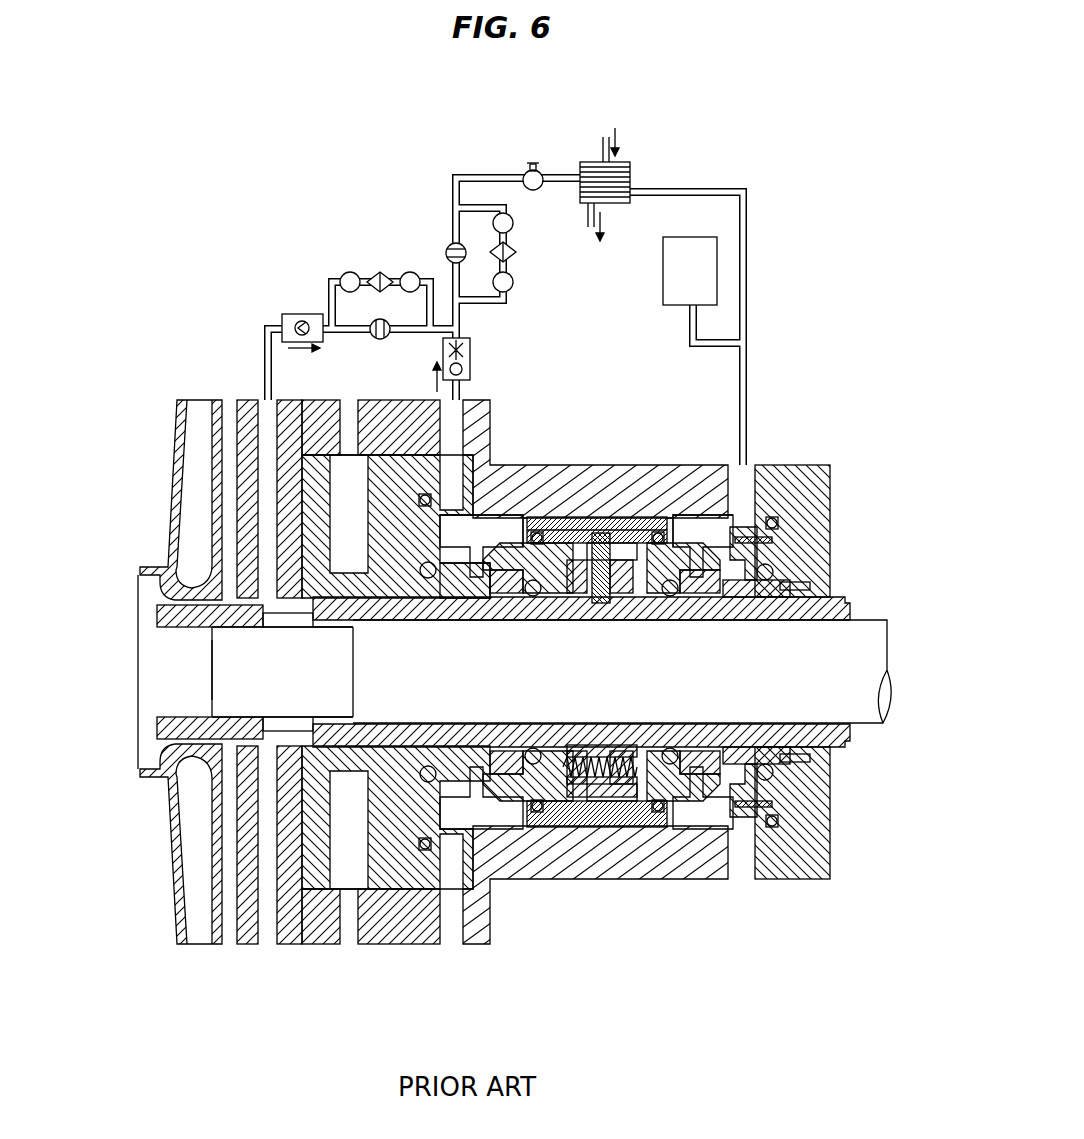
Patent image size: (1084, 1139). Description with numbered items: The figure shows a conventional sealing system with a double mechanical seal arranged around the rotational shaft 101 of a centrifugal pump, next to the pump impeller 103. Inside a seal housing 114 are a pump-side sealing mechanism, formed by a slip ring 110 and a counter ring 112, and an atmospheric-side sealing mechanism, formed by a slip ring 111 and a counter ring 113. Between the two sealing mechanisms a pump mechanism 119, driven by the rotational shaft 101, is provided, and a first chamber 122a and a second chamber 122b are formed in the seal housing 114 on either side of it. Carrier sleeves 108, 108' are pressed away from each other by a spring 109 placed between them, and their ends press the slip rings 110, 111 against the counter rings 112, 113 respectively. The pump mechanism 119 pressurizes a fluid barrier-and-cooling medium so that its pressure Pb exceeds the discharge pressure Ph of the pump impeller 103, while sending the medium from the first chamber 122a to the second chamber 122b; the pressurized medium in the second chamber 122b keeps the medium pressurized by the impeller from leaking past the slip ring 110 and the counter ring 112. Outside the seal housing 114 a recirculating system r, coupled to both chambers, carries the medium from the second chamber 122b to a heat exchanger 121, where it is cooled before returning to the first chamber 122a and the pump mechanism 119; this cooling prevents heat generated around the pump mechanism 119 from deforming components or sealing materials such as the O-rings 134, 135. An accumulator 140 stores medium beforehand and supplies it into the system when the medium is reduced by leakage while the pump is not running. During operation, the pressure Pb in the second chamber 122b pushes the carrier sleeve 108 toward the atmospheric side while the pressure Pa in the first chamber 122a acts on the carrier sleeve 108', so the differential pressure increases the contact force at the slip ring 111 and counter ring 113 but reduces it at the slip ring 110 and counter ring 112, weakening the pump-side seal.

The rotational shaft 101 is at (863, 698).
The pump impeller 103 is at (177, 492).
The carrier sleeve 108 is at (531, 608).
The carrier sleeve 108' is at (675, 608).
The spring 109 is at (620, 752).
The slip ring 110 is at (498, 600).
The slip ring 111 is at (710, 598).
The counter ring 112 is at (442, 592).
The counter ring 113 is at (762, 598).
The seal housing 114 is at (727, 886).
The pump mechanism 119 is at (588, 508).
The heat exchanger 121 is at (632, 175).
The first chamber 122a is at (727, 547).
The second chamber 122b is at (510, 547).
The O-ring 134 is at (566, 514).
The O-ring 135 is at (530, 597).
The accumulator 140 is at (663, 284).
The pressure in the first chamber Pa is at (697, 516).
The pressure in the second chamber Pb is at (536, 530).
The discharge pressure of the pump impeller Ph is at (228, 590).
The recirculating system r is at (738, 180).